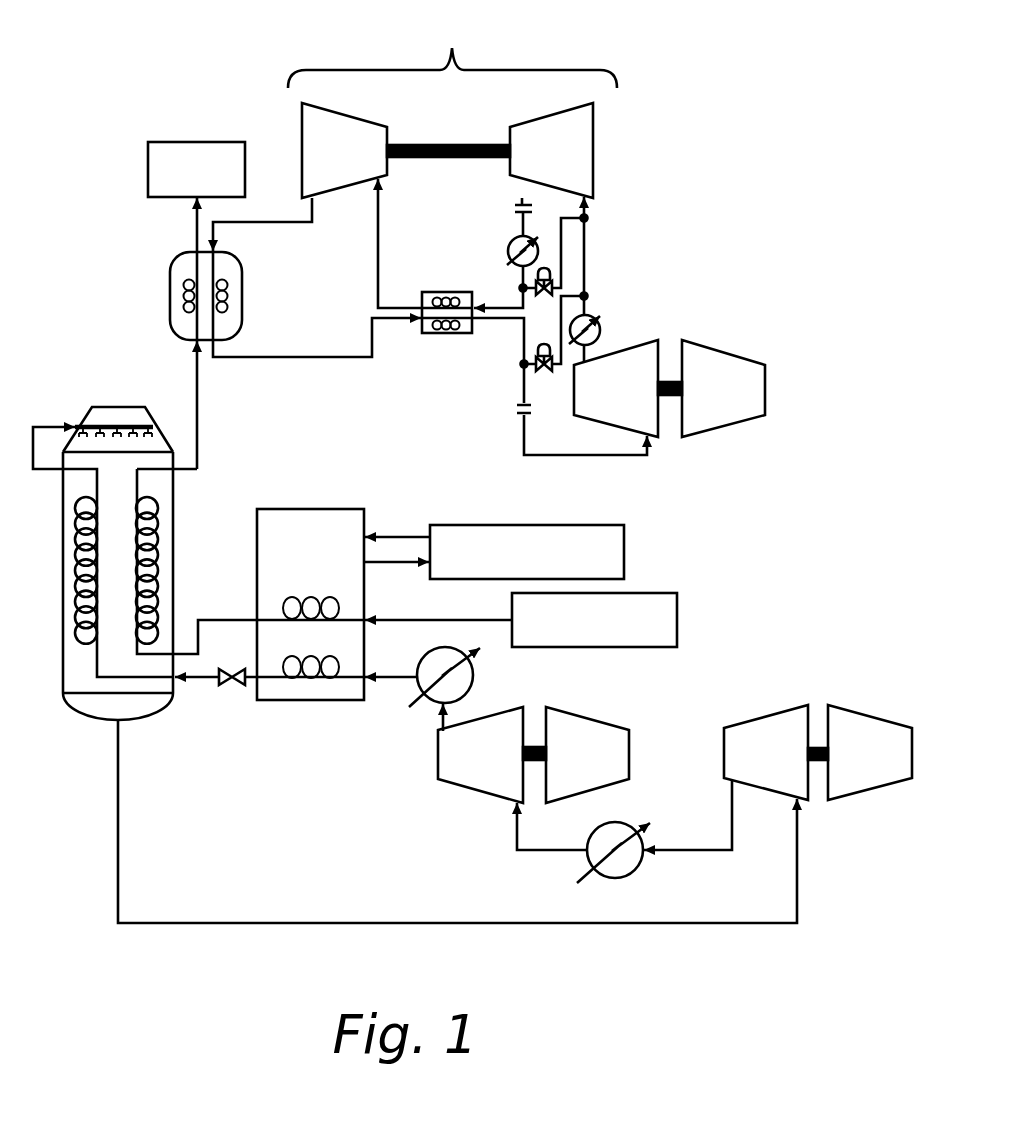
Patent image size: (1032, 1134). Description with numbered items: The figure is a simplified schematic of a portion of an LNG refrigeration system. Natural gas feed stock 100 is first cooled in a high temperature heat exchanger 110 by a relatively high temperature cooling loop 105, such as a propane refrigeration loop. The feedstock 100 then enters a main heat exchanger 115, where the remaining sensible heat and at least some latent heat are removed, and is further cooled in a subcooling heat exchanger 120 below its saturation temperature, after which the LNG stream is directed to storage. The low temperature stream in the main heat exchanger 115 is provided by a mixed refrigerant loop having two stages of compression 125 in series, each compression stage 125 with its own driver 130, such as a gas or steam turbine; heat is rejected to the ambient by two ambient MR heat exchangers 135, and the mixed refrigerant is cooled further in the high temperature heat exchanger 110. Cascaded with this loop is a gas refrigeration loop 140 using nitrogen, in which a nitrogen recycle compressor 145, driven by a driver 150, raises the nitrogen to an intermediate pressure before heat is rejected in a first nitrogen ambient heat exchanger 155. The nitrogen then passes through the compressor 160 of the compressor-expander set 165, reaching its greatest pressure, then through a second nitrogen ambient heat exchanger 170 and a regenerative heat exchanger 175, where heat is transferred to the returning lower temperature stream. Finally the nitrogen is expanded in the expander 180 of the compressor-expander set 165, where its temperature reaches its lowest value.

The feed stock 100 is at (668, 607).
The cooling loop 105 is at (618, 541).
The high temperature heat exchanger 110 is at (268, 515).
The main heat exchanger 115 is at (163, 568).
The subcooling heat exchanger 120 is at (230, 322).
The compression stage 125 is at (460, 761).
The driver 130 is at (566, 761).
The ambient MR heat exchanger 135 is at (467, 680).
The gas refrigeration loop 140 is at (671, 229).
The nitrogen recycle compressor 145 is at (594, 401).
The driver 150 is at (699, 401).
The first nitrogen ambient heat exchanger 155 is at (598, 318).
The compressor 160 is at (530, 167).
The compressor-expander set 165 is at (646, 146).
The second nitrogen ambient heat exchanger 170 is at (504, 245).
The regenerative heat exchanger 175 is at (462, 334).
The expander 180 is at (321, 167).